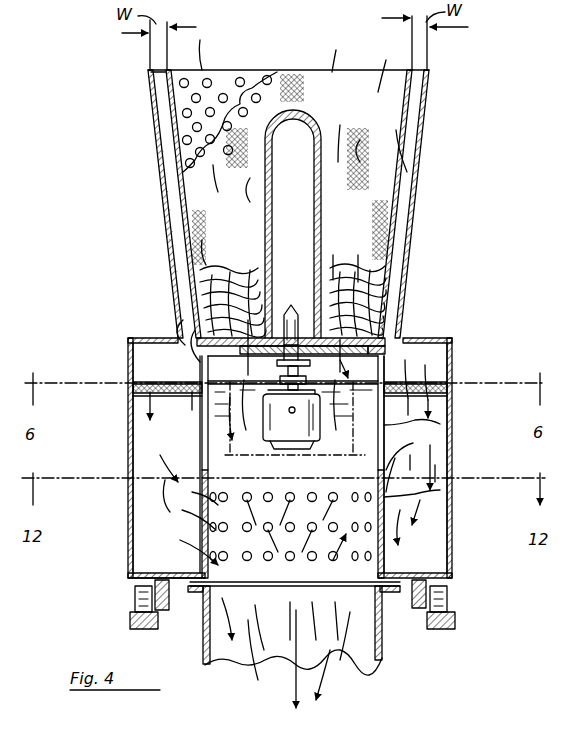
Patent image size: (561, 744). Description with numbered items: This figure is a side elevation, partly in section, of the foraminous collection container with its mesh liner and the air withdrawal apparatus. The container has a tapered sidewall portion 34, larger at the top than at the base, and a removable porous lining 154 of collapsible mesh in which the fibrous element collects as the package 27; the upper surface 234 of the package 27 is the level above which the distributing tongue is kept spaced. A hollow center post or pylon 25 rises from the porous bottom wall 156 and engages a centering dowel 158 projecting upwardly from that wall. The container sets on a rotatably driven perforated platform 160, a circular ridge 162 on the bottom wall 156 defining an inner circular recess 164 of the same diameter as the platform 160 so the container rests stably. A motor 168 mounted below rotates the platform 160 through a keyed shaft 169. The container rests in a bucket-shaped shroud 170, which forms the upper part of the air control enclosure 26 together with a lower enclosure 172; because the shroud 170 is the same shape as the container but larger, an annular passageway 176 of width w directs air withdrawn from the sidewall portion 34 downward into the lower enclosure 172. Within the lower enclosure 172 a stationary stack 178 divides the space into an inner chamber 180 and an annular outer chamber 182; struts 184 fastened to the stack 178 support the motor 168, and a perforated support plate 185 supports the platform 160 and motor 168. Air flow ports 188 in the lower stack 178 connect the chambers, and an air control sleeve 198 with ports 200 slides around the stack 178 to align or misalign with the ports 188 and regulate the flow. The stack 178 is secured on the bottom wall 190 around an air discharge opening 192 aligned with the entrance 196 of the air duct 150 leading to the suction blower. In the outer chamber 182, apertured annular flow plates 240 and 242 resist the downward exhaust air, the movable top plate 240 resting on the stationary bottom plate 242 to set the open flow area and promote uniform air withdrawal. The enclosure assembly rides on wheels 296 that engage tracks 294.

The hollow center post or pylon 25 is at (307, 112).
The air control enclosure or air handling chest 26 is at (438, 100).
The package 27 is at (217, 300).
The tapered sidewall portion 34 is at (167, 87).
The air duct 150 is at (382, 645).
The removable porous lining 154 is at (249, 70).
The porous bottom wall 156 is at (390, 355).
The centering dowel 158 is at (287, 310).
The perforated platform 160 is at (200, 355).
The circular ridge 162 is at (197, 343).
The inner circular recess 164 is at (387, 290).
The motor 168 is at (270, 447).
The keyed shaft 169 is at (340, 360).
The shroud 170 is at (158, 128).
The lower enclosure 172 is at (450, 412).
The annular space or passageway 176 is at (163, 113).
The stack 178 is at (440, 424).
The inner chamber 180 is at (223, 463).
The outer chamber 182 is at (148, 510).
The struts 184 is at (207, 420).
The perforated support plate 185 is at (420, 360).
The air flow ports 188 is at (330, 550).
The bottom wall 190 is at (413, 573).
The air discharge opening 192 is at (400, 556).
The entrance 196 is at (333, 650).
The air control sleeve 198 is at (413, 443).
The air ports 200 is at (384, 497).
The upper surface 234 is at (240, 272).
The top air resistance flow plate 240 is at (163, 380).
The bottom air resistance flow plate 242 is at (136, 388).
The tracks 294 is at (131, 616).
The wheels 296 is at (135, 594).